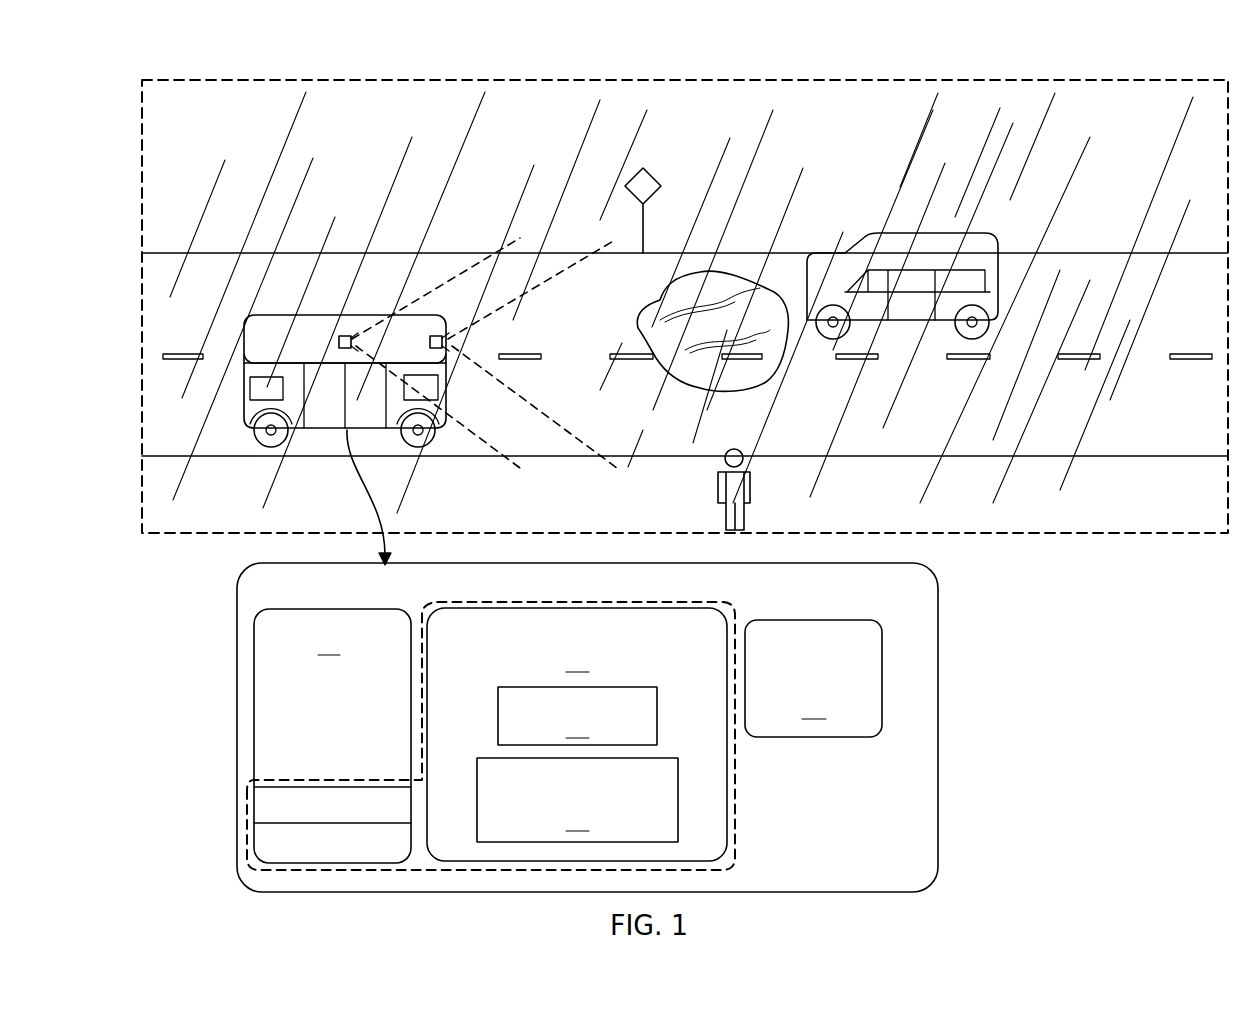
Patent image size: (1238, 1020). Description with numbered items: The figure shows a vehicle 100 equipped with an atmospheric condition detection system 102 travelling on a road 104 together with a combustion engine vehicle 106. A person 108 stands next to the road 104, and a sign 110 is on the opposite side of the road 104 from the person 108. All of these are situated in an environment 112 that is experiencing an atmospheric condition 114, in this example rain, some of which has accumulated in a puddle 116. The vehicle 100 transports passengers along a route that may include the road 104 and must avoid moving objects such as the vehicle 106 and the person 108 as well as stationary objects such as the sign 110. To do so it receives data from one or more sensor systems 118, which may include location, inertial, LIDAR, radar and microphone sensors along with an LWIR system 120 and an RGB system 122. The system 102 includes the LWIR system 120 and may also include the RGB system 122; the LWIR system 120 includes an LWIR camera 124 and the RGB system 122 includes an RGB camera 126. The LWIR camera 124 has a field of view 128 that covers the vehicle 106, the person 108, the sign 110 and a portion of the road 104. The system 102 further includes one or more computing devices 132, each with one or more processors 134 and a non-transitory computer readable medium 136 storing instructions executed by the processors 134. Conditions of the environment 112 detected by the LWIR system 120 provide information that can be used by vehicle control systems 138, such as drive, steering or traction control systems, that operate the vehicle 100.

The vehicle 100 is at (343, 308).
The atmospheric condition detection system 102 is at (736, 792).
The road 104 is at (232, 445).
The combustion engine vehicle 106 is at (968, 230).
The person 108 is at (748, 512).
The sign 110 is at (650, 168).
The environment 112 is at (948, 80).
The atmospheric condition 114 is at (506, 128).
The puddle 116 is at (750, 370).
The sensor system 118 is at (332, 736).
The LWIR system 120 is at (247, 793).
The RGB system 122 is at (247, 833).
The LWIR camera 124 is at (338, 335).
The RGB camera 126 is at (450, 343).
The field of view 128 is at (507, 457).
The computing device 132 is at (577, 734).
The processor 134 is at (577, 716).
The non-transitory computer readable medium 136 is at (512, 388).
The vehicle control system 138 is at (813, 678).